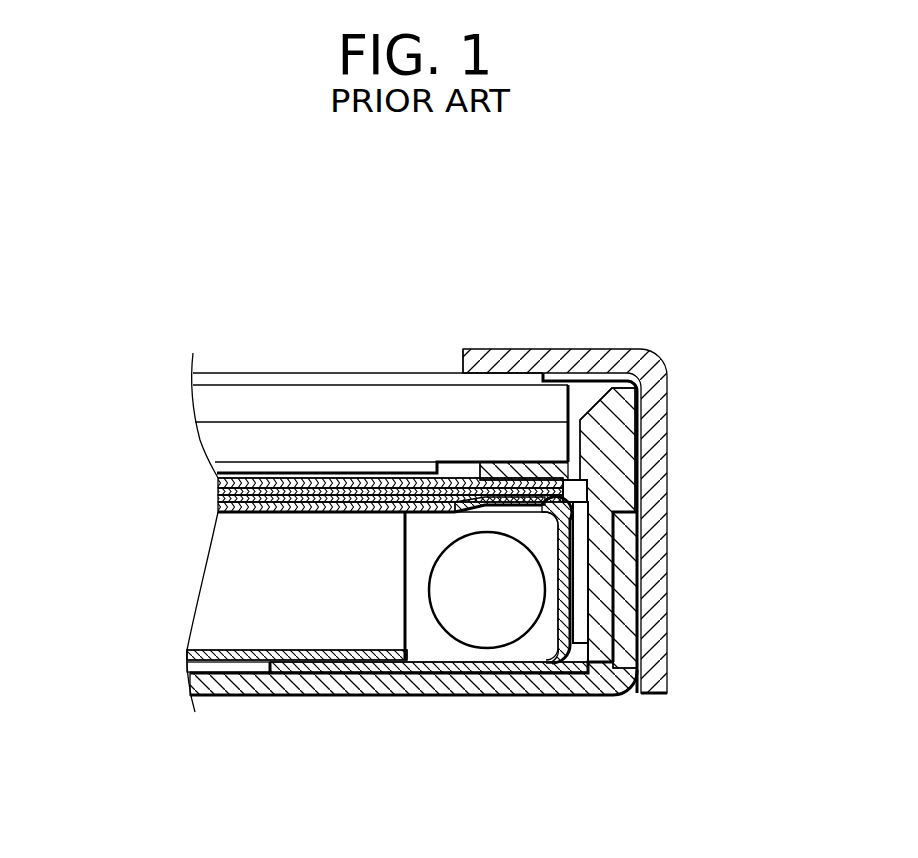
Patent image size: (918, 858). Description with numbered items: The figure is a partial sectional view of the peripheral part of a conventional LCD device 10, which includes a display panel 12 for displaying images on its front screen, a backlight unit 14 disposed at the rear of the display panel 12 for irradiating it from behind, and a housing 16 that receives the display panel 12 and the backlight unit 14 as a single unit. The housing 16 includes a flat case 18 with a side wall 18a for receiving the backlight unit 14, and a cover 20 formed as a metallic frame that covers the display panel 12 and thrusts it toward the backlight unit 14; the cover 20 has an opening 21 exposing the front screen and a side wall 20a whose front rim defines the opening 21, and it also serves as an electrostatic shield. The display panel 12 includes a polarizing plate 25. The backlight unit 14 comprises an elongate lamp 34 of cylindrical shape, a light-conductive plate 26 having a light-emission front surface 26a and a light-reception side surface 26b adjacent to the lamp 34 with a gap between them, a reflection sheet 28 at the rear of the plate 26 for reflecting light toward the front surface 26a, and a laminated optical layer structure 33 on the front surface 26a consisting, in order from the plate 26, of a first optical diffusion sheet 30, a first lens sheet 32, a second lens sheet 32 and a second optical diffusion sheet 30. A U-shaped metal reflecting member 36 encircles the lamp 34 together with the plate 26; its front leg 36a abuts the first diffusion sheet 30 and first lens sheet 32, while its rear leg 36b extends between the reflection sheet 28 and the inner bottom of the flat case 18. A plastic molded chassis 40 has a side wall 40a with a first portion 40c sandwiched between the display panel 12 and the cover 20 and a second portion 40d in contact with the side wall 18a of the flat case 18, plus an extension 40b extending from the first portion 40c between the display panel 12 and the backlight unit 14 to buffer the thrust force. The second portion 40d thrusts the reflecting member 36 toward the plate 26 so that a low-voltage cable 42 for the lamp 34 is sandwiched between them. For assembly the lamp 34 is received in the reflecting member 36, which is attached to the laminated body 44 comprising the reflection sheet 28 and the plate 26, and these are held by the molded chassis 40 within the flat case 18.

The LCD device 10 is at (445, 265).
The display panel 12 is at (147, 385).
The backlight unit 14 is at (42, 690).
The housing 16 is at (715, 762).
The flat case 18 is at (565, 694).
The side wall of the flat case 18a is at (625, 612).
The cover 20 is at (672, 665).
The side wall of the cover 20a is at (650, 577).
The opening 21 is at (360, 368).
The polarizing plate 25 is at (425, 377).
The light-conductive plate 26 is at (215, 603).
The light-emission front surface 26a is at (312, 513).
The light-reception side surface 26b is at (400, 638).
The reflection sheet 28 is at (190, 653).
The optical diffusion sheet 30 is at (218, 481).
The lens sheet 32 is at (218, 490).
The laminated optical layer structure 33 is at (97, 462).
The elongate lamp 34 is at (407, 602).
The reflecting member 36 is at (448, 516).
The front leg of the reflecting member 36a is at (397, 513).
The rear leg of the reflecting member 36b is at (328, 667).
The molded chassis 40 is at (832, 337).
The side wall of the molded chassis 40a is at (760, 390).
The extension 40b is at (520, 467).
The first portion 40c is at (610, 428).
The second portion 40d is at (640, 522).
The low-voltage cable 42 is at (587, 577).
The laminated body 44 is at (97, 597).